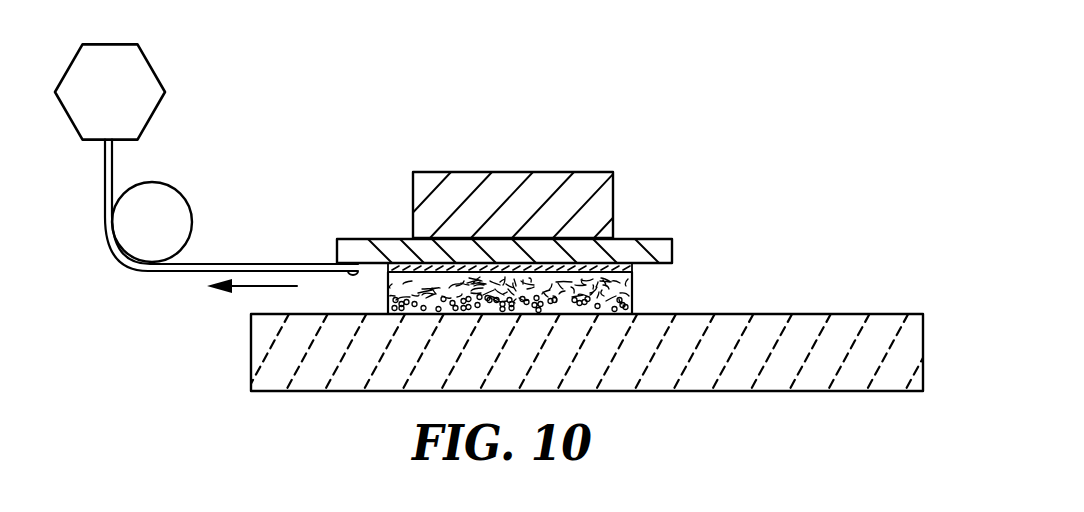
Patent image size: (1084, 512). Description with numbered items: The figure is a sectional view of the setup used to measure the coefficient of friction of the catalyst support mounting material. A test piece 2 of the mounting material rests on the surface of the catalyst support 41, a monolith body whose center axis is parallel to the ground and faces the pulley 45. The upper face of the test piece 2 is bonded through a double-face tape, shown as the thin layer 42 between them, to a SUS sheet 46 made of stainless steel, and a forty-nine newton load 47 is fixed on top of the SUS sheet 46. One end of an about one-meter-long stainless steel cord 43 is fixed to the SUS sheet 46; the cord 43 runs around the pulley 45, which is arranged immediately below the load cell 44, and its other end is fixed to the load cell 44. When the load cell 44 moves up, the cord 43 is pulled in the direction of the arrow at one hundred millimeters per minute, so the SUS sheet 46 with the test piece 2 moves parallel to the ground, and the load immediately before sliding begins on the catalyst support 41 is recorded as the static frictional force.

The test piece 2 is at (633, 301).
The catalyst support 41 is at (845, 320).
The adhesive layer 42 is at (633, 272).
The stainless steel cord 43 is at (280, 263).
The load cell 44 is at (137, 70).
The pulley 45 is at (162, 197).
The SUS sheet 46 is at (635, 245).
The load 47 is at (547, 180).